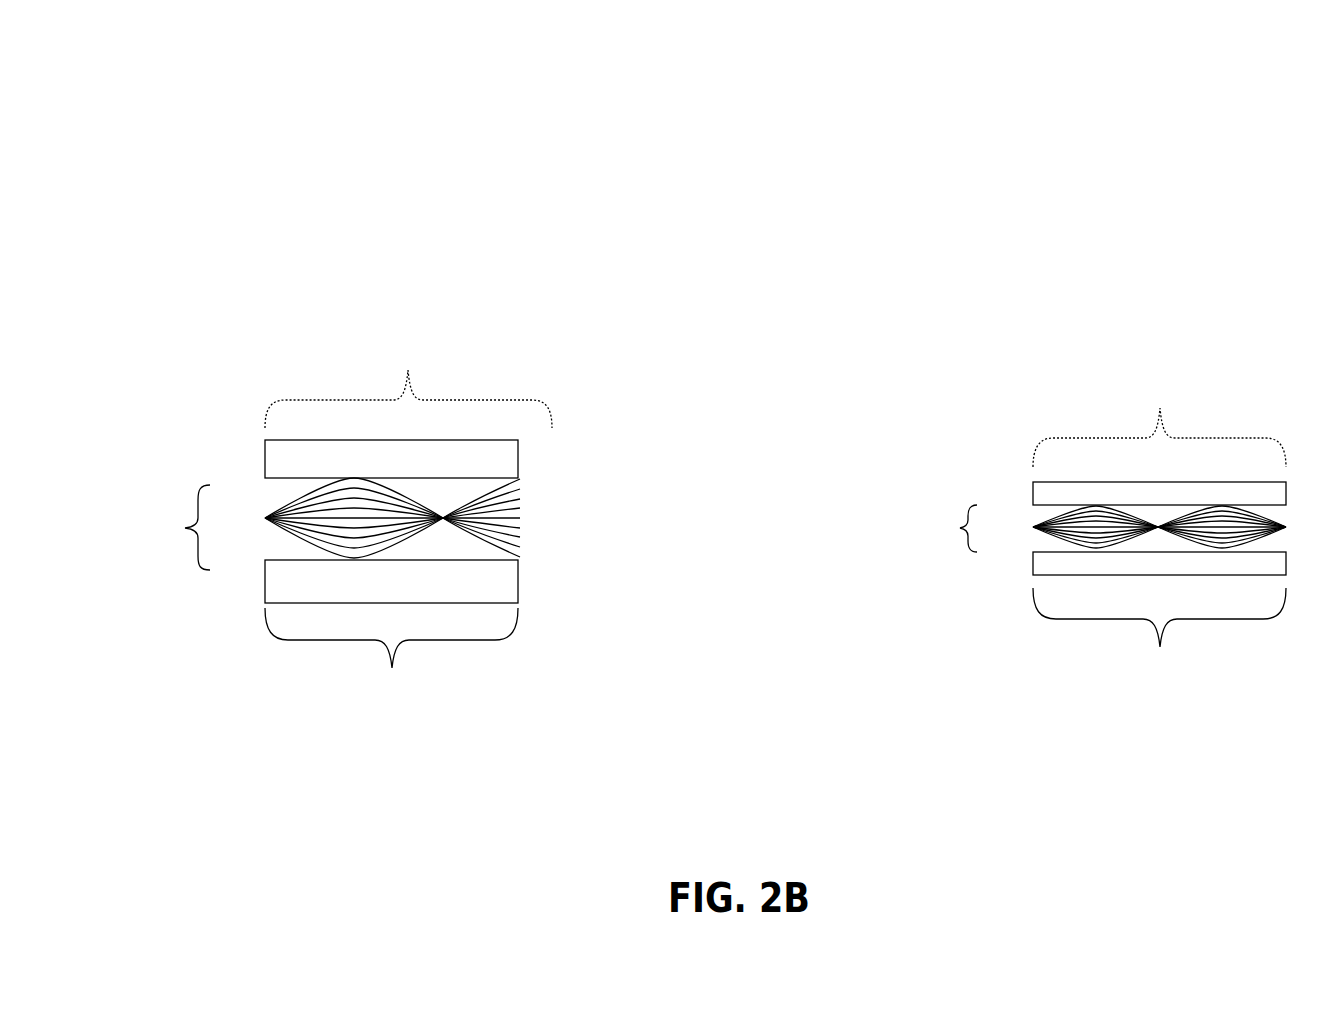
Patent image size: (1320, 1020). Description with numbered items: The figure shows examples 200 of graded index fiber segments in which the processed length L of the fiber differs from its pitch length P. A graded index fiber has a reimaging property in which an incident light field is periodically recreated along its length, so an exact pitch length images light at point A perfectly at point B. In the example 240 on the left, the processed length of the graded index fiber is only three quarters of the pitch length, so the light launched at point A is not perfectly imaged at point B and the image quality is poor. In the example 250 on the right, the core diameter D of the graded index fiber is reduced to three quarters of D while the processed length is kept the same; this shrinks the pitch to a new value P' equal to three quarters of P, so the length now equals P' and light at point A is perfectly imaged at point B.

The examples of graded index fiber segments 200 is at (196, 57).
The example where processed length is less than pitch length 240 is at (356, 455).
The example where fiber diameter is reduced to three quarters 250 is at (1096, 455).